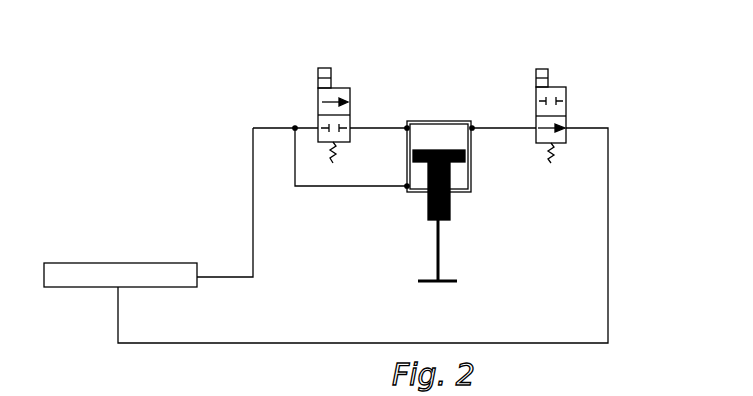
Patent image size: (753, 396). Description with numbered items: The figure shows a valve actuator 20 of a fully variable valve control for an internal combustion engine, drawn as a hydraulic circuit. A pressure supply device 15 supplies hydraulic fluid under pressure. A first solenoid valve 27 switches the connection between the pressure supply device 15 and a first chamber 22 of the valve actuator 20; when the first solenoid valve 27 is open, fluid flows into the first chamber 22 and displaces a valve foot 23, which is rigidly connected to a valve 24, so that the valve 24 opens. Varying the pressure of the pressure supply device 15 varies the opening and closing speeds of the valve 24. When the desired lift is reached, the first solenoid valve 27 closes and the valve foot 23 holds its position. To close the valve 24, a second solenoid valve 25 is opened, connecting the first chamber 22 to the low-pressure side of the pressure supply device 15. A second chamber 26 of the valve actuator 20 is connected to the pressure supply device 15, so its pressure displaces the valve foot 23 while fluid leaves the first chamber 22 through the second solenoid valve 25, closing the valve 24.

The pressure supply device 15 is at (135, 260).
The valve actuator 20 is at (447, 183).
The first chamber 22 is at (437, 128).
The valve foot 23 is at (470, 149).
The valve 24 is at (442, 262).
The second solenoid valve 25 is at (564, 86).
The second chamber 26 is at (409, 190).
The first solenoid valve 27 is at (351, 87).